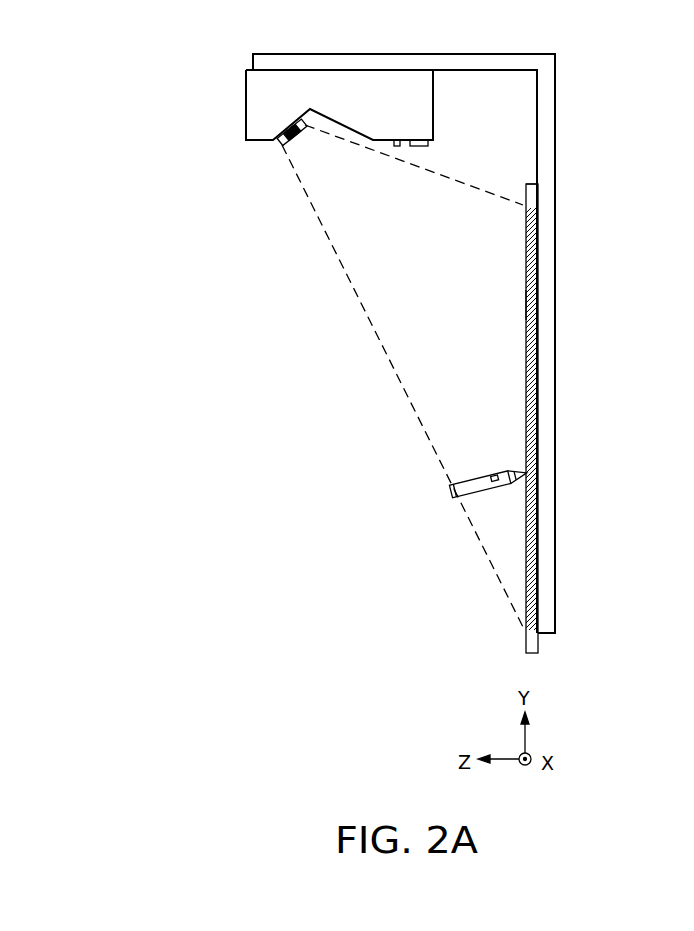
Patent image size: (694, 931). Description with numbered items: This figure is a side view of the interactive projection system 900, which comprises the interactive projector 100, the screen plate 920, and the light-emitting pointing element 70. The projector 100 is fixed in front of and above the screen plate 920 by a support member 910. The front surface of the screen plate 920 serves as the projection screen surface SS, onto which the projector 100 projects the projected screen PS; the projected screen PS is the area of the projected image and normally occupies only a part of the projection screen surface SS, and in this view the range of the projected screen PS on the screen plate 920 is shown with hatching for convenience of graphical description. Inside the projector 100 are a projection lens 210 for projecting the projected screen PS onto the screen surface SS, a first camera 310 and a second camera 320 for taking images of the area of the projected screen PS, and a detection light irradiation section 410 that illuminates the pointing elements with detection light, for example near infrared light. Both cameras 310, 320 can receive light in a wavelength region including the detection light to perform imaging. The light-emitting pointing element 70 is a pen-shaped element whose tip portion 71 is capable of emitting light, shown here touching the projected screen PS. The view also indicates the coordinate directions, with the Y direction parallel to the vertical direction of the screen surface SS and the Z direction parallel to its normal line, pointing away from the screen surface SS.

The interactive projection system 900 is at (583, 85).
The interactive projector 100 is at (378, 82).
The first camera 310 is at (287, 123).
The projection lens 210 is at (279, 144).
The detection light irradiation section 410 is at (397, 147).
The second camera 320 is at (432, 142).
The support member 910 is at (547, 180).
The screen plate 920 is at (532, 195).
The projection screen surface SS is at (523, 193).
The projected screen PS is at (525, 290).
The light-emitting pointing element 70 is at (450, 491).
The tip portion 71 is at (527, 472).